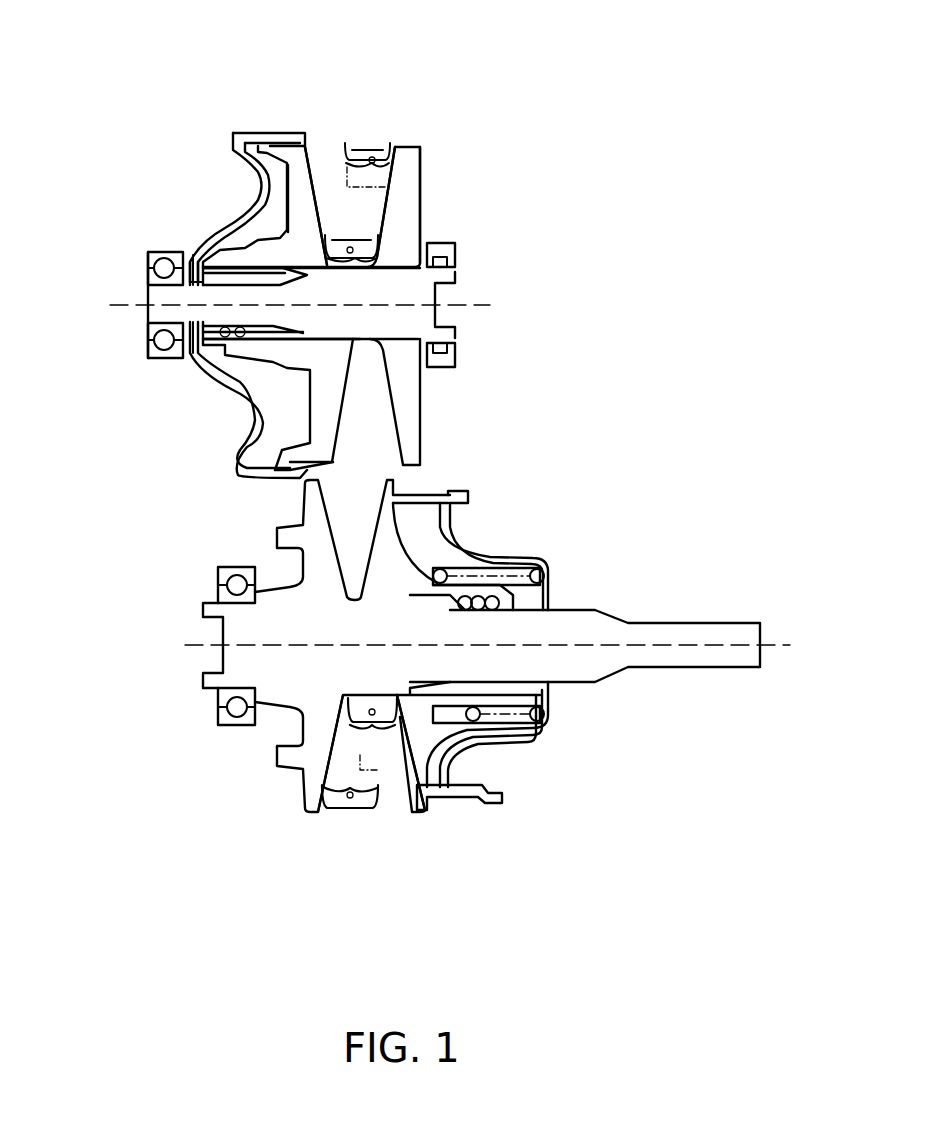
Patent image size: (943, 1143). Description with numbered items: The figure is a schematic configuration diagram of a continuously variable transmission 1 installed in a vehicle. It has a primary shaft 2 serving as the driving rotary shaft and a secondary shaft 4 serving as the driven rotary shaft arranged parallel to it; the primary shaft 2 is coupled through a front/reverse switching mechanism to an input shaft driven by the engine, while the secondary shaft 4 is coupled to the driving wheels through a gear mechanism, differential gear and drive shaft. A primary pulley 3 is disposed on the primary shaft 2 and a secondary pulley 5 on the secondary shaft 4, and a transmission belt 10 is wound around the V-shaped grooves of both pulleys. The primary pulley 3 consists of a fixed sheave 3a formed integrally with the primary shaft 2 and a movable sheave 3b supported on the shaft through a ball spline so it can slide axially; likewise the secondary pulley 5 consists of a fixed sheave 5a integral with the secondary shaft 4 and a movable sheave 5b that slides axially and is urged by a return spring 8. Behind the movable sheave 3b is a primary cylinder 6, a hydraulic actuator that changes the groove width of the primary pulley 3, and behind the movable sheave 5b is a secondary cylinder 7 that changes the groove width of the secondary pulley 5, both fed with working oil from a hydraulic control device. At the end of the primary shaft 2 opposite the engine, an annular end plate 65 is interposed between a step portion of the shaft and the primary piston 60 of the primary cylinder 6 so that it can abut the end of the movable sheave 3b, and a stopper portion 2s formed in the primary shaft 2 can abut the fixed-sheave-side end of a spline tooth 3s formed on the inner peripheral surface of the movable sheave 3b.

The continuously variable transmission 1 is at (545, 397).
The primary shaft 2 is at (147, 298).
The stopper portion 2s is at (303, 280).
The primary pulley 3 is at (436, 42).
The fixed sheave 3a is at (407, 170).
The movable sheave 3b is at (310, 265).
The spline tooth 3s is at (308, 262).
The secondary shaft 4 is at (595, 632).
The secondary pulley 5 is at (411, 899).
The fixed sheave 5a is at (312, 787).
The movable sheave 5b is at (422, 773).
The primary cylinder 6 is at (244, 212).
The secondary cylinder 7 is at (472, 748).
The return spring 8 is at (548, 565).
The transmission belt 10 is at (380, 247).
The primary piston 60 is at (258, 407).
The end plate 65 is at (196, 262).